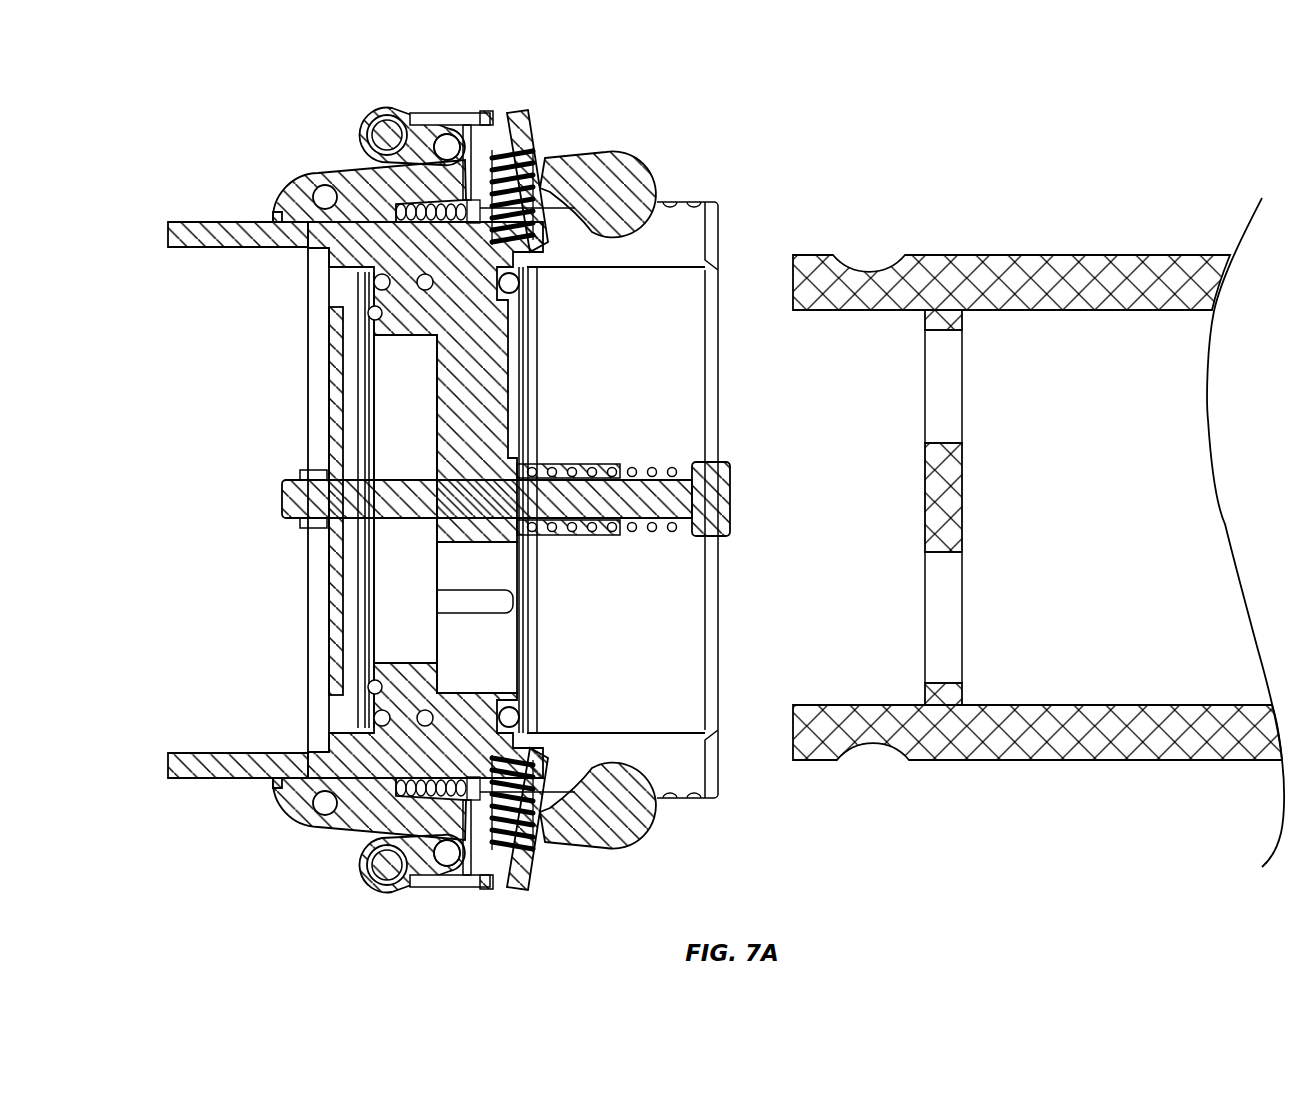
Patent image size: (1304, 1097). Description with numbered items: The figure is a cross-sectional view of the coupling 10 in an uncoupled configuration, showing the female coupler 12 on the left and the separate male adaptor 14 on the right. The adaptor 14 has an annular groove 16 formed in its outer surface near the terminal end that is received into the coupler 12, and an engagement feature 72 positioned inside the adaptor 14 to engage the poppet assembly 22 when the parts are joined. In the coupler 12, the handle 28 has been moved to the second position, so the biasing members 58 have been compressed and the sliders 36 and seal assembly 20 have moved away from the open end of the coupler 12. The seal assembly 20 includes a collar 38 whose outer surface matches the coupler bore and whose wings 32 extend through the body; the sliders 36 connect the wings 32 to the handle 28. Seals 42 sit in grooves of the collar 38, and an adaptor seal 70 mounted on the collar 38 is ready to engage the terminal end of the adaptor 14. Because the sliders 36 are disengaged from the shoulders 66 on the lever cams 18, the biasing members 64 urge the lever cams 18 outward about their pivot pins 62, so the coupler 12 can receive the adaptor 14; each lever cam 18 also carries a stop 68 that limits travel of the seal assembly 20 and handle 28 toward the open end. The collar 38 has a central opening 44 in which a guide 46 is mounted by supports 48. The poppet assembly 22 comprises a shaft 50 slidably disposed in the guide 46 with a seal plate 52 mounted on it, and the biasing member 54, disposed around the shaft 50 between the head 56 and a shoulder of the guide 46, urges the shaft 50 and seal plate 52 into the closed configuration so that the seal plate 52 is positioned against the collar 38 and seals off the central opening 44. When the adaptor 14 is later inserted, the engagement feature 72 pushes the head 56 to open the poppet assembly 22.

The coupling device 10 is at (736, 96).
The coupler 12 is at (210, 145).
The adaptor 14 is at (1117, 183).
The annular groove 16 is at (870, 272).
The lever cam 18 is at (646, 164).
The seal assembly 20 is at (548, 342).
The poppet assembly 22 is at (424, 536).
The handle 28 is at (389, 128).
The wing 32 is at (460, 114).
The slider 36 is at (406, 112).
The collar 38 is at (407, 297).
The seal 42 is at (382, 727).
The central opening 44 is at (612, 540).
The guide 46 is at (478, 663).
The support 48 is at (437, 397).
The shaft 50 is at (285, 497).
The seal plate 52 is at (327, 640).
The biasing member 54 is at (655, 470).
The head 56 is at (733, 500).
The biasing member 58 is at (391, 213).
The pivot pin 62 is at (325, 194).
The biasing member 64 is at (527, 178).
The shoulder 66 is at (483, 122).
The stop 68 is at (534, 133).
The adaptor seal 70 is at (535, 293).
The engagement feature 72 is at (966, 514).